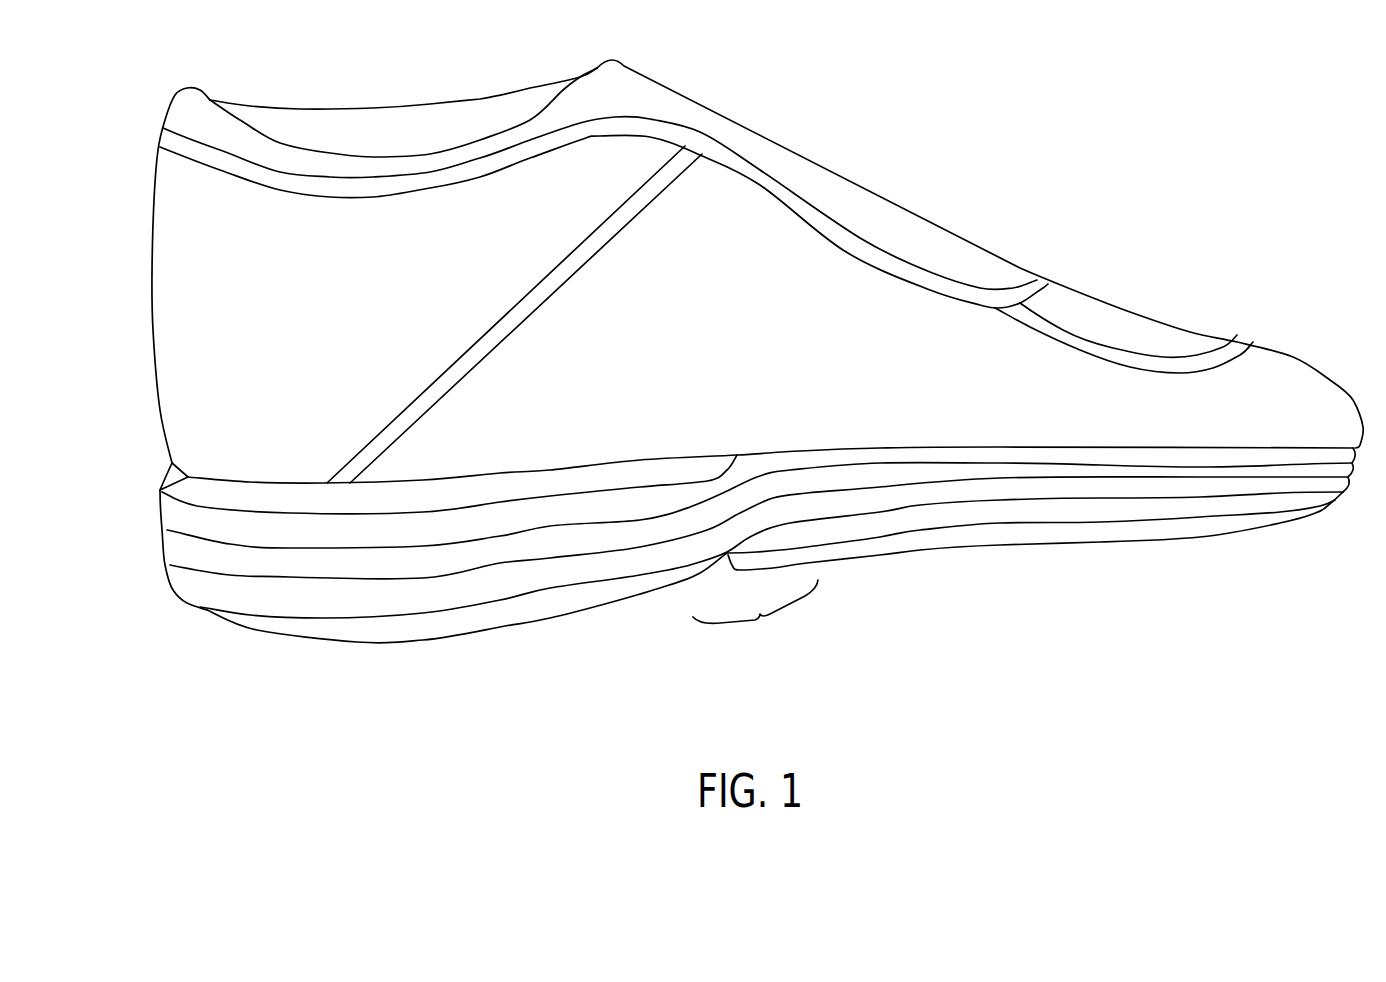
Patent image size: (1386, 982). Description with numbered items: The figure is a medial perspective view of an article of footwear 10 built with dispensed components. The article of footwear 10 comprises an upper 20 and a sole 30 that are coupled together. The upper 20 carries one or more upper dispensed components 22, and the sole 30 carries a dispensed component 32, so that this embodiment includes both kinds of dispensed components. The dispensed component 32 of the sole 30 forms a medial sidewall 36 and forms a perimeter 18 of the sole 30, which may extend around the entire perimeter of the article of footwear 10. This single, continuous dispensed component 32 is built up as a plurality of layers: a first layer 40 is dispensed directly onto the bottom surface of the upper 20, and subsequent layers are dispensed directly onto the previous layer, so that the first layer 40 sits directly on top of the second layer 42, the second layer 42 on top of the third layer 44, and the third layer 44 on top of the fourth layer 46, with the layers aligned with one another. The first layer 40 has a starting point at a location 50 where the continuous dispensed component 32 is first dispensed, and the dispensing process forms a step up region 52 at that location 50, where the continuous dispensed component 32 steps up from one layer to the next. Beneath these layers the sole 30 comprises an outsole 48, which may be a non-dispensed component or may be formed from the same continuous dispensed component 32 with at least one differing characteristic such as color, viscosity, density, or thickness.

The article of footwear 10 is at (1100, 153).
The perimeter 18 is at (167, 497).
The upper 20 is at (738, 217).
The dispensed component 22 is at (548, 287).
The sole 30 is at (175, 552).
The dispensed component 32 is at (1268, 493).
The medial sidewall 36 is at (923, 495).
The first layer 40 is at (472, 485).
The second layer 42 is at (522, 515).
The third layer 44 is at (563, 542).
The fourth layer 46 is at (333, 597).
The outsole 48 is at (1023, 532).
The location 50 is at (722, 452).
The step up region 52 is at (755, 623).